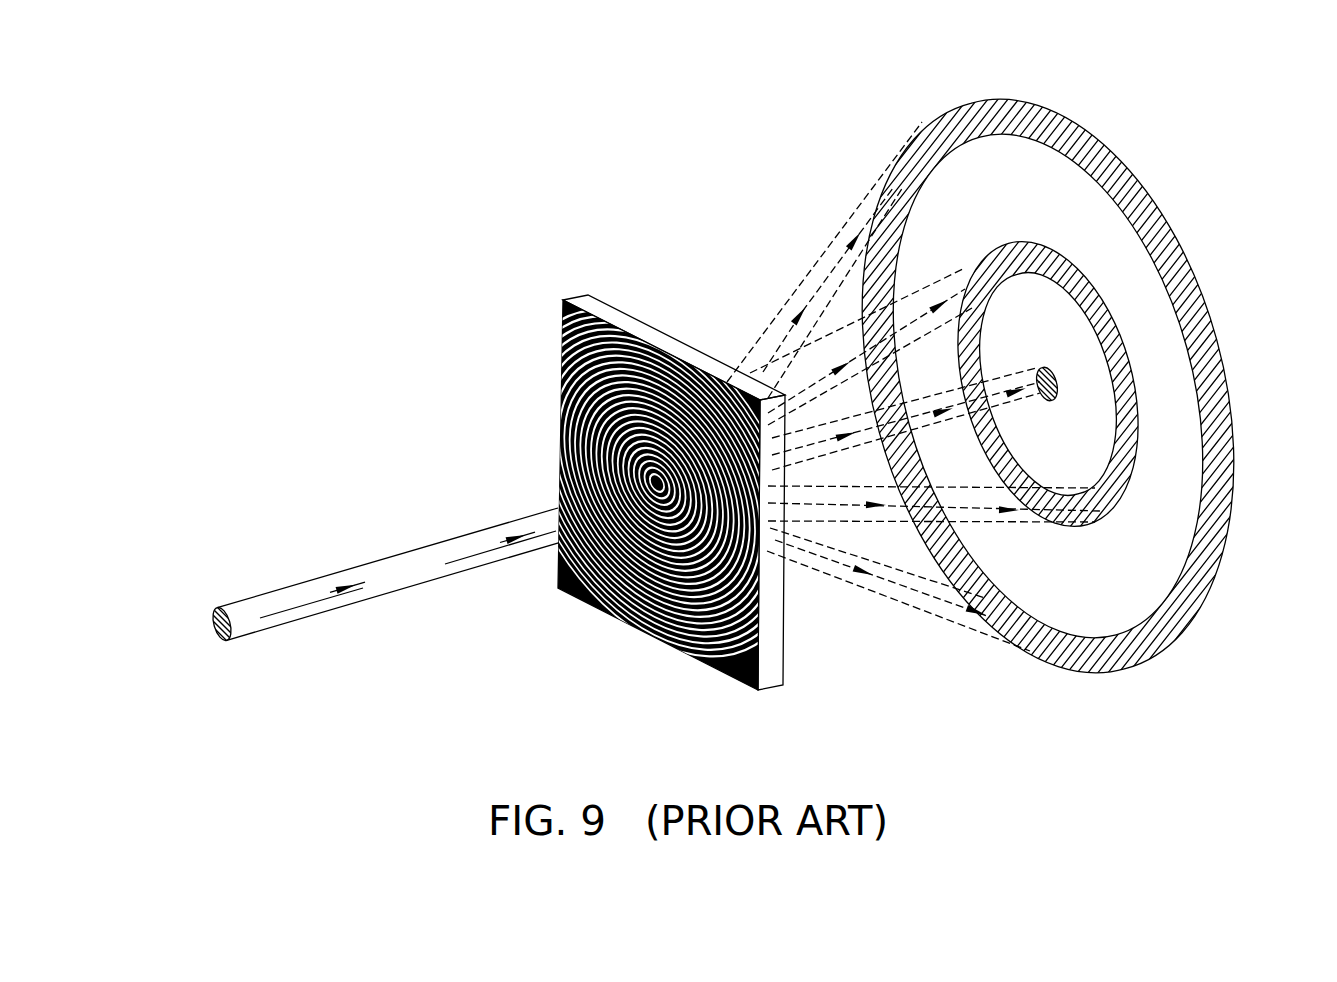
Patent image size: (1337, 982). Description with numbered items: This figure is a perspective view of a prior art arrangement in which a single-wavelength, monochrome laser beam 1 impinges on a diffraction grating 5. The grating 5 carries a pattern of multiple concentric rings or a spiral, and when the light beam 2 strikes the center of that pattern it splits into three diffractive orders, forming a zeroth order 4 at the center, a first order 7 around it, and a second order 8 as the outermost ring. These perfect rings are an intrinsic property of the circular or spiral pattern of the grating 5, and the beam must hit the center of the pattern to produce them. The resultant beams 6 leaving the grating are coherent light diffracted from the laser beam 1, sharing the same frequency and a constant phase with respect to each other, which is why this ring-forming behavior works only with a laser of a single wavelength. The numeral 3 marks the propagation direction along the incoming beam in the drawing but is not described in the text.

The laser beam 1 is at (213, 618).
The light beam 2 is at (337, 603).
The optical axis 3 is at (343, 593).
The 0th order diffraction pattern 4 is at (1056, 390).
The diffraction grating 5 is at (652, 332).
The resultant beams 6 is at (807, 307).
The 1st order diffraction pattern 7 is at (1090, 285).
The 2nd order diffraction pattern 8 is at (1063, 127).